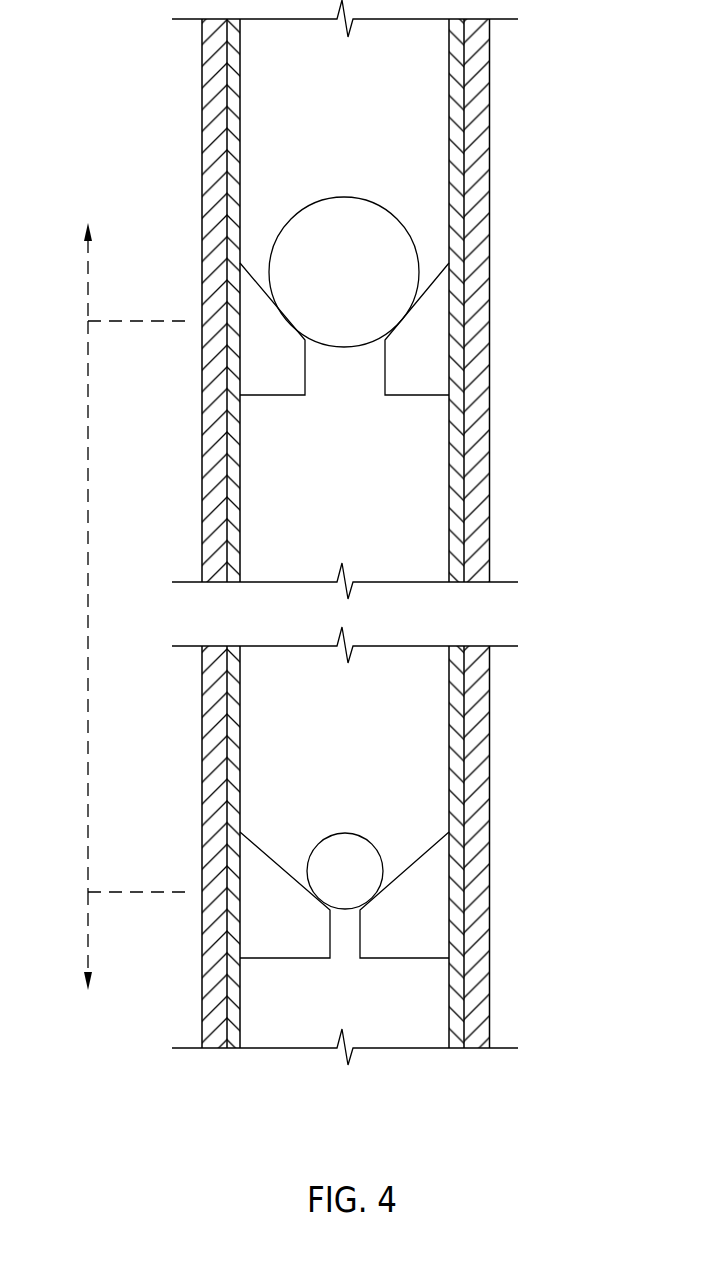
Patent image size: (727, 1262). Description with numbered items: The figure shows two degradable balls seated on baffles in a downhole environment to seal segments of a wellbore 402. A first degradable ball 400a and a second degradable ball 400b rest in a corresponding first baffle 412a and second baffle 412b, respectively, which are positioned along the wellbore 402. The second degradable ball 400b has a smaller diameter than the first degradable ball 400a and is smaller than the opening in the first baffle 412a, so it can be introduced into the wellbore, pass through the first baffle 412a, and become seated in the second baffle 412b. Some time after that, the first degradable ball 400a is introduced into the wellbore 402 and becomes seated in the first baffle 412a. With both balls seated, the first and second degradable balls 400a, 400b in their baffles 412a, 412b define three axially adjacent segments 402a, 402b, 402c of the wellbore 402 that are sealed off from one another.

The wellbore 402 is at (483, 162).
The first segment of wellbore 402a is at (107, 272).
The second segment of wellbore 402b is at (57, 606).
The third segment of wellbore 402c is at (107, 941).
The first degradable ball 400a is at (370, 286).
The second degradable ball 400b is at (319, 887).
The first baffle 412a is at (425, 356).
The second baffle 412b is at (425, 923).